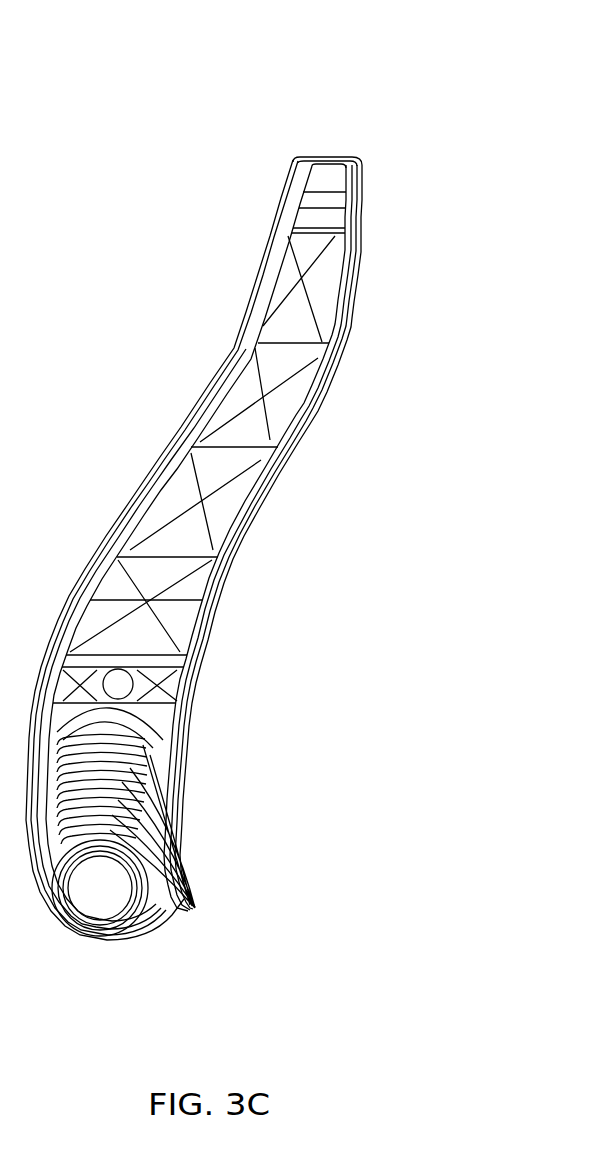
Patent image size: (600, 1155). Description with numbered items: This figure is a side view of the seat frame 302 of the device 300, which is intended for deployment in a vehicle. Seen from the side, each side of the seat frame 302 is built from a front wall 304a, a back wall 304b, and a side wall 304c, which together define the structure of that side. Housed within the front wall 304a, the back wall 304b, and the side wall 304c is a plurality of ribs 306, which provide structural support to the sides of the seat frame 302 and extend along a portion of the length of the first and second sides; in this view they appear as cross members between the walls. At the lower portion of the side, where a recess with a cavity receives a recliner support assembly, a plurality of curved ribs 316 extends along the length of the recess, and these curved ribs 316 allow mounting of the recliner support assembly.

The device 300 is at (188, 46).
The seat frame 302 is at (248, 106).
The front wall 304a is at (177, 443).
The back wall 304b is at (282, 472).
The side wall 304c is at (227, 470).
The ribs 306 is at (303, 364).
The curved ribs 316 is at (197, 909).